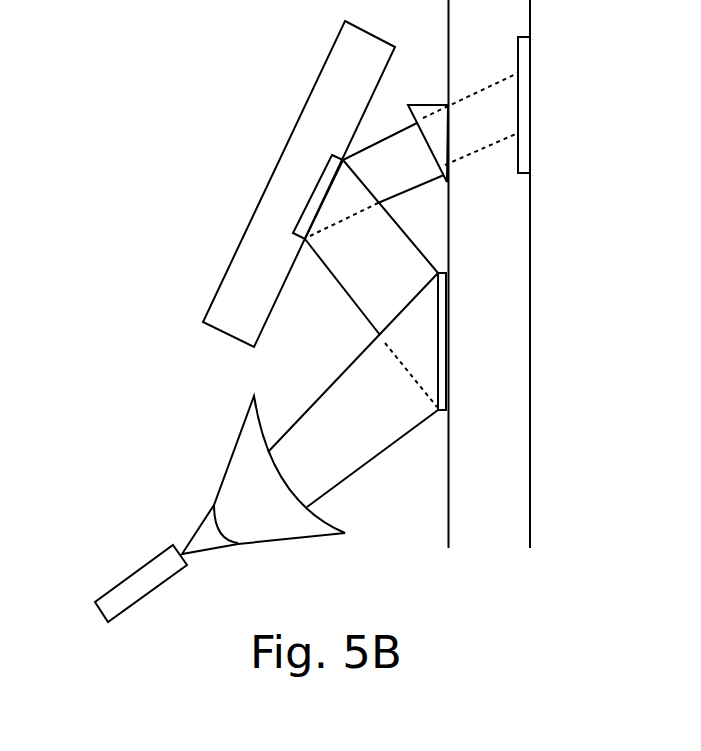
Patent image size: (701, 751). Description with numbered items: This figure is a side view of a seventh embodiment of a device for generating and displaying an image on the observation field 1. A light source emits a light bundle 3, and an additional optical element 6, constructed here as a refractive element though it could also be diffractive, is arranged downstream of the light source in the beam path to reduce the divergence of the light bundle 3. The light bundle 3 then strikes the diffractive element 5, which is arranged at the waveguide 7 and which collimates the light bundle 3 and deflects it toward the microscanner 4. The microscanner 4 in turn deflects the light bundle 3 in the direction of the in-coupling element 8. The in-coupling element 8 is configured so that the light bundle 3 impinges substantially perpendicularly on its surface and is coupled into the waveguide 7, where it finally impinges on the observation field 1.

The observation field 1 is at (518, 140).
The light bundle 3 is at (338, 379).
The microscanner 4 is at (232, 260).
The diffractive element 5 is at (438, 345).
The additional optical element 6 is at (222, 480).
The waveguide 7 is at (532, 222).
The in-coupling element 8 is at (448, 140).